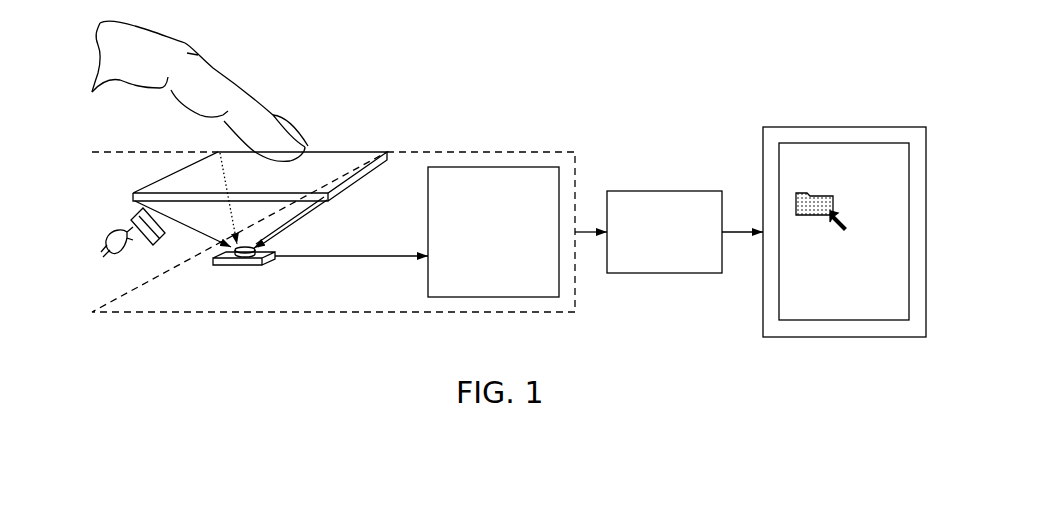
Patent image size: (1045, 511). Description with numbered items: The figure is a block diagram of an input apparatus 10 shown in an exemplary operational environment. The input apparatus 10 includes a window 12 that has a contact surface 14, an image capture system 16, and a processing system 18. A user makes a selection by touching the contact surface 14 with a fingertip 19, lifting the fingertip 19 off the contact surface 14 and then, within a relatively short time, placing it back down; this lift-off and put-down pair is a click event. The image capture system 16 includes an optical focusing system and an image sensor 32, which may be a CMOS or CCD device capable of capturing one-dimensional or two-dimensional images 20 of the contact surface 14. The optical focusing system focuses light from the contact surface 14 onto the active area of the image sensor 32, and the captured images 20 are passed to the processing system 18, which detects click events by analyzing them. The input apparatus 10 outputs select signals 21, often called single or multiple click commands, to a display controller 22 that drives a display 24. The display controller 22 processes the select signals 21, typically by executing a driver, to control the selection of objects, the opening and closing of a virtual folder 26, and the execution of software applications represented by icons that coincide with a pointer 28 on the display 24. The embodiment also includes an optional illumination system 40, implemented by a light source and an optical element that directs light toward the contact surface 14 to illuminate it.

The input apparatus 10 is at (544, 71).
The window 12 is at (254, 162).
The contact surface 14 is at (333, 160).
The image capture system 16 is at (212, 277).
The processing system 18 is at (494, 167).
The fingertip 19 is at (268, 107).
The images 20 is at (387, 255).
The select signals 21 is at (582, 233).
The display controller 22 is at (663, 191).
The display 24 is at (844, 127).
The virtual folder 26 is at (812, 198).
The pointer 28 is at (846, 221).
The image sensor 32 is at (237, 265).
The illumination system 40 is at (135, 263).